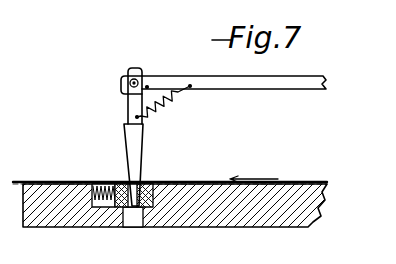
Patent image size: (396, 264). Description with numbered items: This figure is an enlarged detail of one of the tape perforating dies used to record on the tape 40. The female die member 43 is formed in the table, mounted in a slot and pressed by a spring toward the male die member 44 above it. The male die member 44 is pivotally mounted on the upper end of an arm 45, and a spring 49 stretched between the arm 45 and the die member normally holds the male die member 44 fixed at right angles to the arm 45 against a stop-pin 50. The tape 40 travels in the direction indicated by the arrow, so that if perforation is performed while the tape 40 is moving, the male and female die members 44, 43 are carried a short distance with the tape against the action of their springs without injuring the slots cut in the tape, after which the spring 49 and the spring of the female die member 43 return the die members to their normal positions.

The tape 40 is at (300, 187).
The female die member 43 is at (152, 187).
The male die member 44 is at (133, 147).
The arm 45 is at (276, 90).
The spring 49 is at (176, 100).
The stop-pin 50 is at (147, 78).